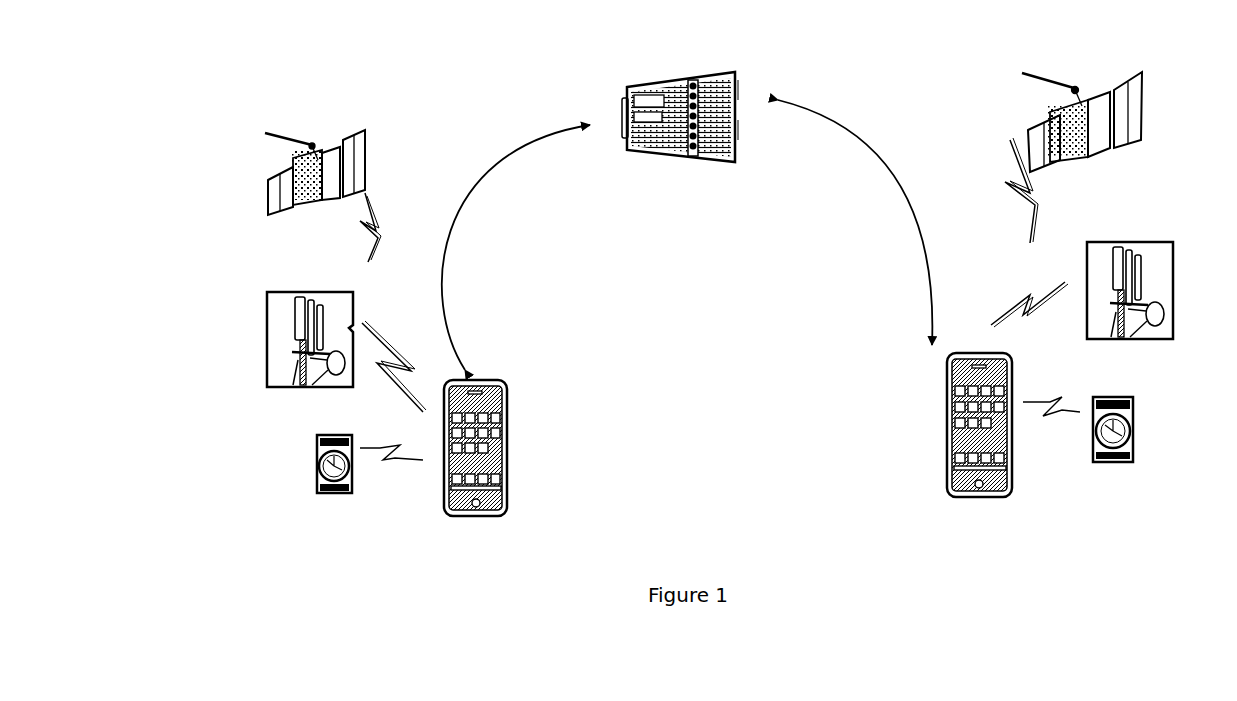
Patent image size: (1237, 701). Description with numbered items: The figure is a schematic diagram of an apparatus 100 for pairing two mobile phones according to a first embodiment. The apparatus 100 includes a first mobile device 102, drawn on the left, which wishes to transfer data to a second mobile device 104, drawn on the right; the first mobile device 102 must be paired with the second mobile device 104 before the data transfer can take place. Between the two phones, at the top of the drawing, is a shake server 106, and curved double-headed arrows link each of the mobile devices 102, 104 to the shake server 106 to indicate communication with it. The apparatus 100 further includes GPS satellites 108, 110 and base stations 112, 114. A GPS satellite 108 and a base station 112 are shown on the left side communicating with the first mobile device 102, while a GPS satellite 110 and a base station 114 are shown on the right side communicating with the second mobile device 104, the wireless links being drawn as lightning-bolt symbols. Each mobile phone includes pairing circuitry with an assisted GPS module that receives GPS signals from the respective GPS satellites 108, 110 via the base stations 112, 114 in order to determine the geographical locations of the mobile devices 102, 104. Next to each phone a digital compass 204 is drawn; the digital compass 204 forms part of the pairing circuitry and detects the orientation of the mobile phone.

The apparatus 100 is at (433, 113).
The first mobile device 102 is at (516, 320).
The second mobile device 104 is at (950, 428).
The shake server 106 is at (709, 239).
The GPS satellite 108 is at (285, 179).
The GPS satellite 110 is at (1043, 143).
The base station 112 is at (295, 338).
The base station 114 is at (1103, 271).
The digital compass 204 is at (724, 462).